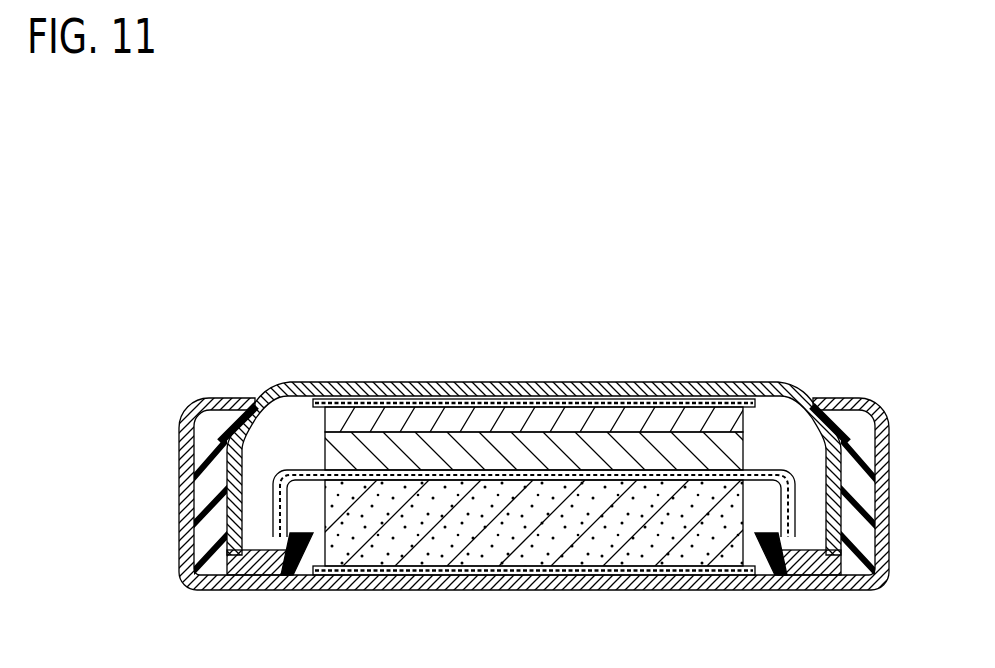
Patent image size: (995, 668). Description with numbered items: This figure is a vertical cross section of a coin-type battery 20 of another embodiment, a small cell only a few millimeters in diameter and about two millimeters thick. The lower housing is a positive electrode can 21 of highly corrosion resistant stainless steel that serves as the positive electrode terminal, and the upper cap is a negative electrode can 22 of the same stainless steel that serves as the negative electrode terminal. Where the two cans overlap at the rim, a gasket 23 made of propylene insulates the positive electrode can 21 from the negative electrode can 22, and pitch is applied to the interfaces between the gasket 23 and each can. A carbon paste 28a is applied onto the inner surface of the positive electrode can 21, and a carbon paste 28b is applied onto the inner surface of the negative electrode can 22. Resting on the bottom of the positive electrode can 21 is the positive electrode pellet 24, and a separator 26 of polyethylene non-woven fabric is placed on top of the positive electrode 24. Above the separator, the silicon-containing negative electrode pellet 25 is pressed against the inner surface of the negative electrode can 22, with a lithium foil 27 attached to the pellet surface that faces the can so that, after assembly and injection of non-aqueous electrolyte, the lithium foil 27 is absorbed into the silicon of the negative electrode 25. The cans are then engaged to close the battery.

The coin-type battery 20 is at (509, 251).
The positive electrode can 21 is at (262, 590).
The negative electrode can 22 is at (478, 382).
The gasket 23 is at (238, 428).
The positive electrode pellet 24 is at (509, 540).
The negative electrode pellet 25 is at (556, 452).
The separator 26 is at (619, 470).
The lithium foil 27 is at (399, 422).
The carbon paste 28a is at (672, 572).
The carbon paste 28b is at (705, 405).